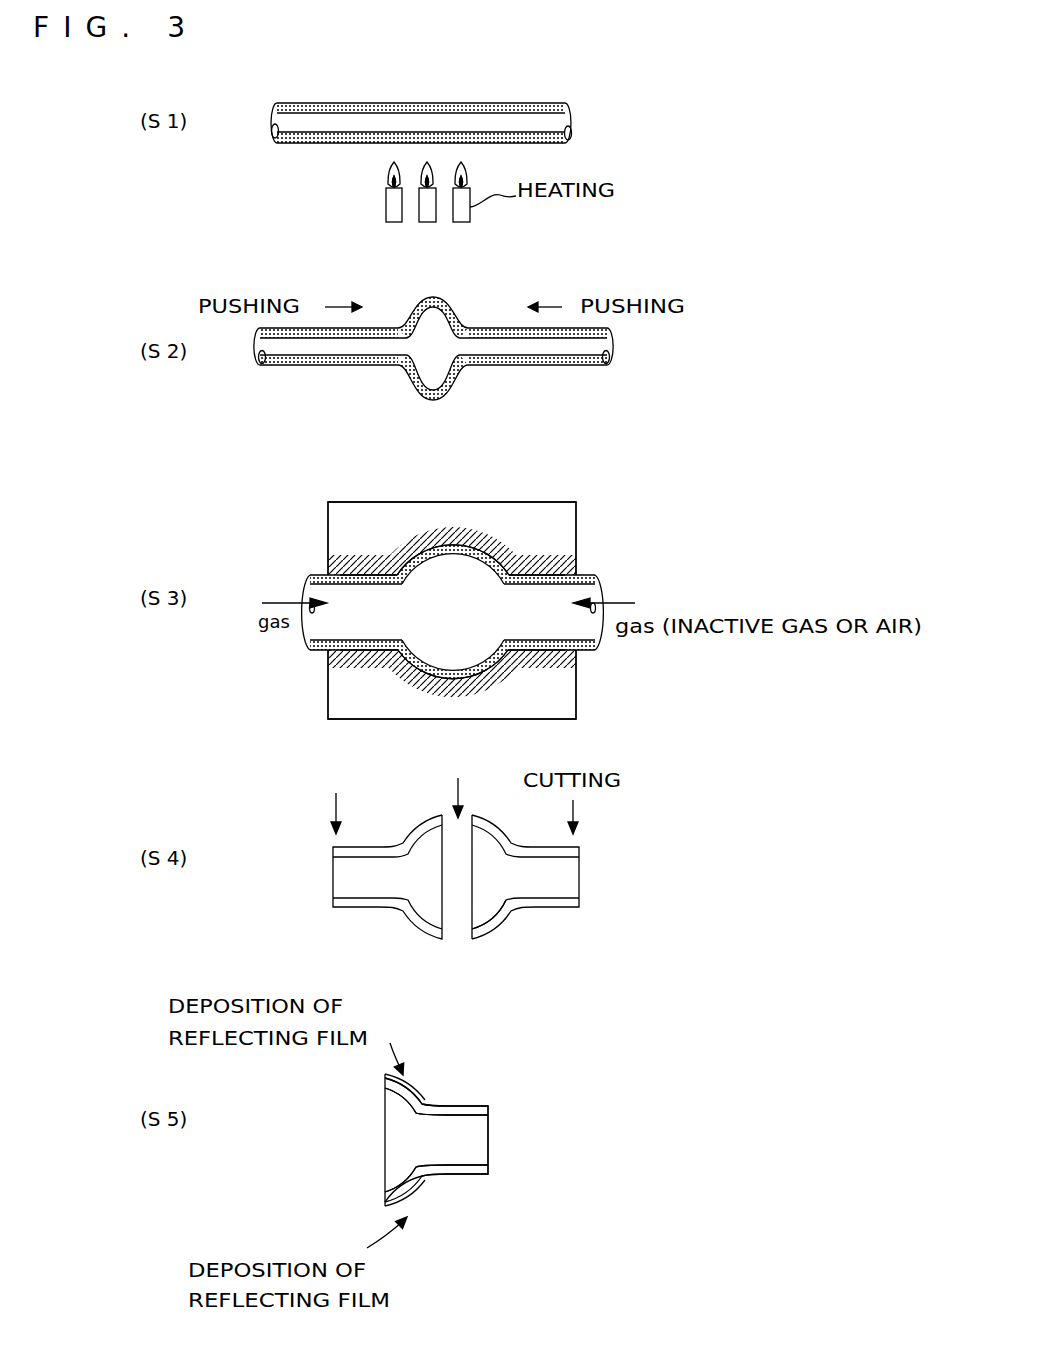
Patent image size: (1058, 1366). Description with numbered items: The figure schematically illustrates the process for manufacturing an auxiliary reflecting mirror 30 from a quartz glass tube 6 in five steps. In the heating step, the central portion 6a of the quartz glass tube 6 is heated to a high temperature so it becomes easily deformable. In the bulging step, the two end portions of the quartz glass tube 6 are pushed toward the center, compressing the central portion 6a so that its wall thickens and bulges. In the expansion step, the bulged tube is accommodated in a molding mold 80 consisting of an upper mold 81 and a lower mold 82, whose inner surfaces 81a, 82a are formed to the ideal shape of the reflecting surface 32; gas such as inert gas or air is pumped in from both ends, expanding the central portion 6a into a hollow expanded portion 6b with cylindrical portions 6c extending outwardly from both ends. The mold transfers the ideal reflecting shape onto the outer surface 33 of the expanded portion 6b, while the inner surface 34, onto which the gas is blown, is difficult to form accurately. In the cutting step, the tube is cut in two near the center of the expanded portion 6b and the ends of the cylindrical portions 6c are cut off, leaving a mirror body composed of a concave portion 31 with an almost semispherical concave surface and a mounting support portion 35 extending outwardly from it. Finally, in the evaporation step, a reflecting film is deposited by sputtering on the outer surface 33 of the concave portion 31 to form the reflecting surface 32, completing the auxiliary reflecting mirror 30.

The quartz glass tube 6 is at (565, 108).
The central portion 6a is at (453, 312).
The expanded portion 6b is at (506, 545).
The cylindrical portions 6c is at (546, 565).
The molding mold 80 is at (587, 483).
The upper mold 81 is at (522, 507).
The inner surface of upper mold 81a is at (420, 550).
The lower mold 82 is at (568, 690).
The inner surface of lower mold 82a is at (387, 663).
The auxiliary reflecting mirror 30 is at (574, 1192).
The concave portion 31 is at (525, 915).
The reflecting surface 32 is at (423, 1198).
The outer surface 33 is at (512, 920).
The inner surface 34 is at (483, 930).
The mounting support portion 35 is at (565, 907).